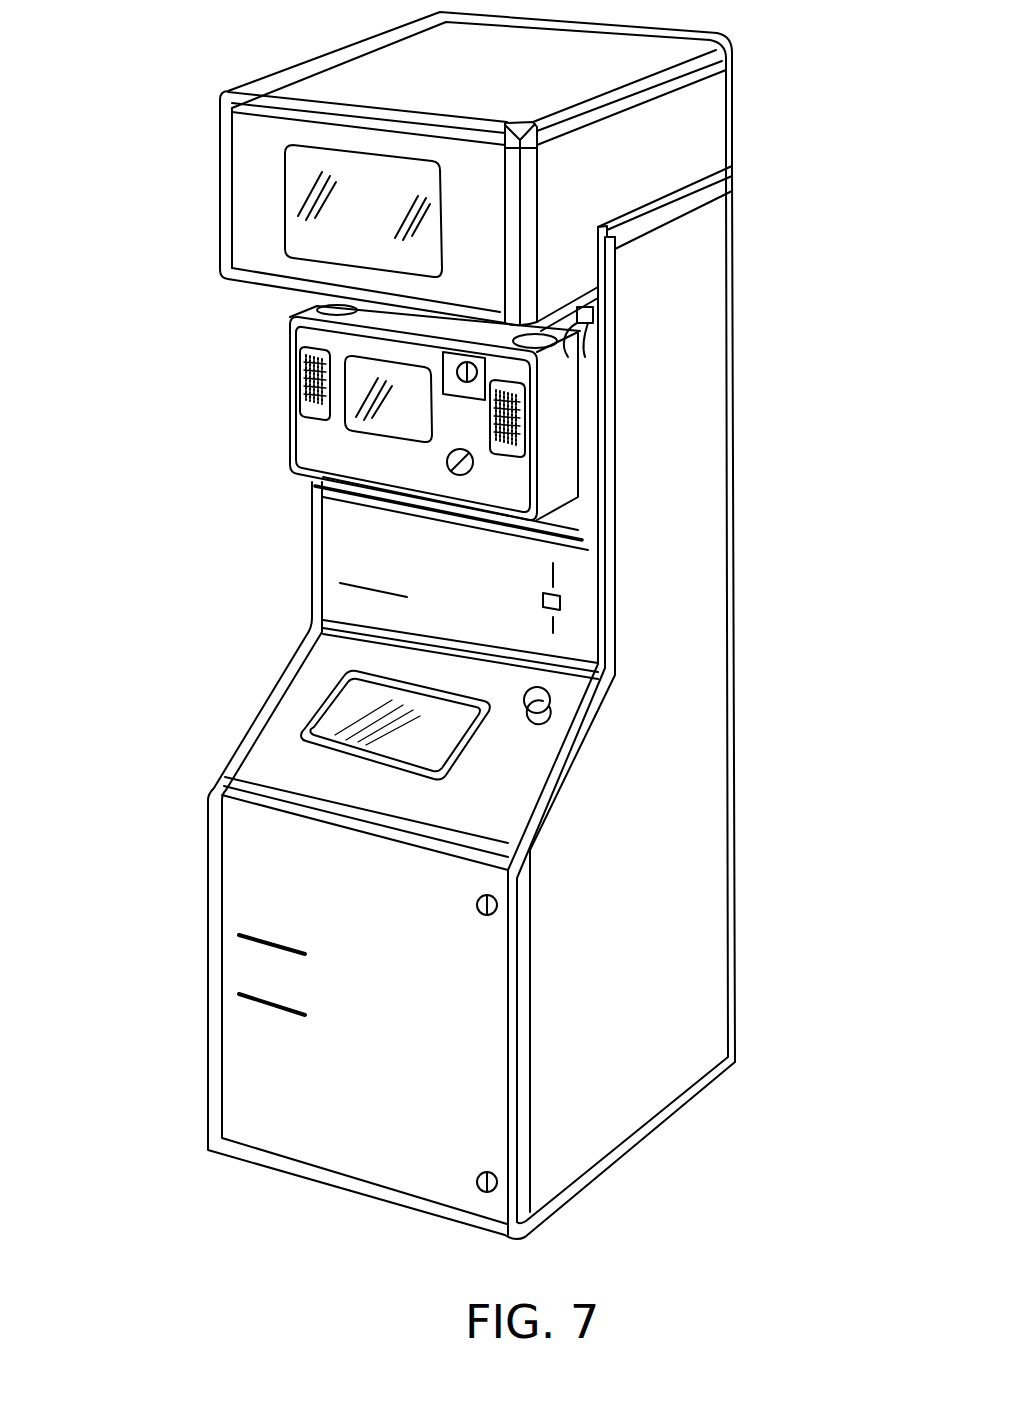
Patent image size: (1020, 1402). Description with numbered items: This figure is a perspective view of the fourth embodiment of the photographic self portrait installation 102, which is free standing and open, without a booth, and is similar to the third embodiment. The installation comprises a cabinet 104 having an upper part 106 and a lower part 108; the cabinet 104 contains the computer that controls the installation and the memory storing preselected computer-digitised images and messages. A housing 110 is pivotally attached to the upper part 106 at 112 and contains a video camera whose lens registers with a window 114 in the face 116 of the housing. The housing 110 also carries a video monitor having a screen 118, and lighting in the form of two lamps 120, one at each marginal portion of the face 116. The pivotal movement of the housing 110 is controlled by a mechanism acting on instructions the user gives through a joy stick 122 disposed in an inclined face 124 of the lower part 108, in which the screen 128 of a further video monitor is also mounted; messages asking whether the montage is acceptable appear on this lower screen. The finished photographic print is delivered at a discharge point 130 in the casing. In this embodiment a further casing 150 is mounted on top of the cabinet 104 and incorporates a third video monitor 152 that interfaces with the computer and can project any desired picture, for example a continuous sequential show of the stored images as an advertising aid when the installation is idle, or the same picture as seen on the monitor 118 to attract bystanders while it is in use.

The photographic self portrait installation 102 is at (444, 702).
The cabinet 104 is at (683, 700).
The upper part 106 is at (693, 318).
The lower part 108 is at (686, 912).
The housing 110 is at (455, 373).
The pivotal attachment 112 is at (593, 312).
The window 114 is at (447, 462).
The face of the housing 116 is at (323, 463).
The screen 118 is at (357, 372).
The lamps 120 is at (307, 407).
The joy stick 122 is at (560, 708).
The inclined face 124 is at (263, 761).
The screen of further video monitor 128 is at (337, 710).
The discharge point 130 is at (253, 1004).
The further casing 150 is at (706, 131).
The third video monitor 152 is at (330, 230).